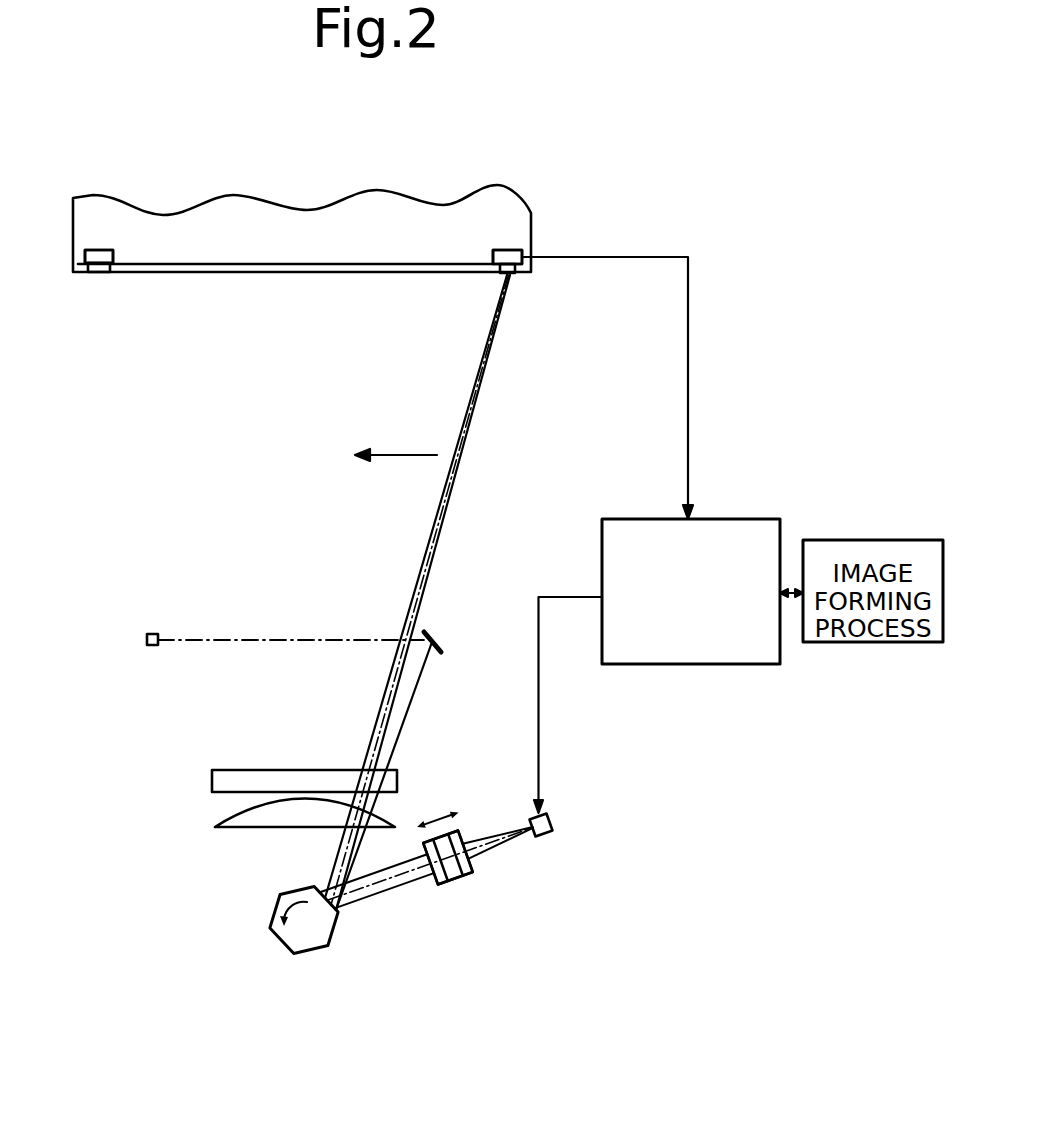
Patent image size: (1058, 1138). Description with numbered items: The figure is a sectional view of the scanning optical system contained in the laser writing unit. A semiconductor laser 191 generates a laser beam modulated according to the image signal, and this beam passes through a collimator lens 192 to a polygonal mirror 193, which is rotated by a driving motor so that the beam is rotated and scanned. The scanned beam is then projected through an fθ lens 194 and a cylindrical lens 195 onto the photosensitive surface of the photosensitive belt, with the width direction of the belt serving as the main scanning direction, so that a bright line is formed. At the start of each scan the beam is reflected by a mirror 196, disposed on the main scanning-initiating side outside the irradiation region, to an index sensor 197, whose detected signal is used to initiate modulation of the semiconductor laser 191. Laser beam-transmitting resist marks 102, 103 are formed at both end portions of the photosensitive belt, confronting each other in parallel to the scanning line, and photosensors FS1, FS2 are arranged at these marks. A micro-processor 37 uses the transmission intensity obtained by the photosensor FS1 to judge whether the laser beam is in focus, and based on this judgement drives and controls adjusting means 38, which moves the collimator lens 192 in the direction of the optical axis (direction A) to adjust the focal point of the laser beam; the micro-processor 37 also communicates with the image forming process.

The photosensor FS1 is at (515, 250).
The second beam position sensor FS2 is at (108, 250).
The resist mark 102 is at (500, 273).
The resist mark 103 is at (98, 273).
The micro-processor 37 is at (748, 519).
The adjusting means 38 is at (442, 882).
The semiconductor laser 191 is at (552, 818).
The collimator lens 192 is at (453, 882).
The polygonal mirror 193 is at (303, 956).
The fθ lens 194 is at (233, 840).
The cylindrical lens 195 is at (223, 770).
The mirror 196 is at (437, 634).
The index sensor 197 is at (152, 632).